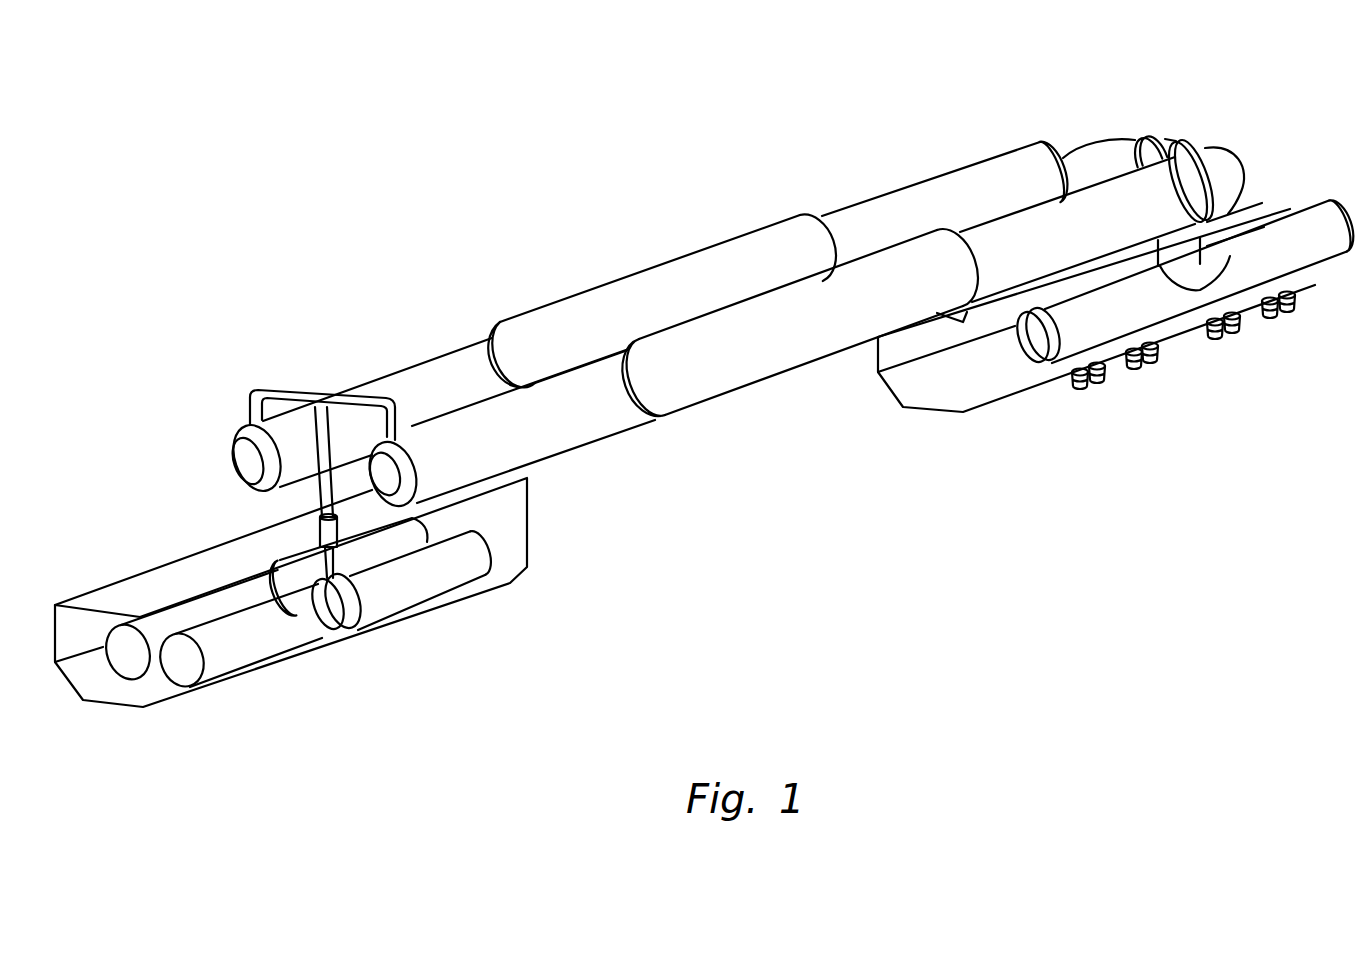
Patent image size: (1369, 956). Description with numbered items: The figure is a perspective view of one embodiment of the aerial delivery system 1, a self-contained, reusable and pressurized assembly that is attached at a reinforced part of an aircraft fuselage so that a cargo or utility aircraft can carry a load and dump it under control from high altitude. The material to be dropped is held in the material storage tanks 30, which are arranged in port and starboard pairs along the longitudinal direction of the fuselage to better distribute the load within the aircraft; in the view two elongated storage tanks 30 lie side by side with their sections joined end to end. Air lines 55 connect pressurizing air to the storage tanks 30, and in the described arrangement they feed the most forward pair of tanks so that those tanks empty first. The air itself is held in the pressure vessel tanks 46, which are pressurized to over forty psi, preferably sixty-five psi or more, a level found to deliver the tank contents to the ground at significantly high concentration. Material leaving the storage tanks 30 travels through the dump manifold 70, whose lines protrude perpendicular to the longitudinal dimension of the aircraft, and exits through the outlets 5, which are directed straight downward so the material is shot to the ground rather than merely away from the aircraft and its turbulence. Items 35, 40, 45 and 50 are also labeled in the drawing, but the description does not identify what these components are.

The aerial delivery system 1 is at (403, 140).
The outlets 5 is at (1080, 386).
The material storage tanks 30 is at (653, 283).
The tee connection 35 is at (1192, 234).
The flanges 40 is at (1139, 140).
The lower pipes 45 is at (258, 655).
The pressure vessel tanks 46 is at (450, 582).
The sensor 50 is at (320, 532).
The air lines 55 is at (292, 398).
The dump manifold 70 is at (1027, 343).